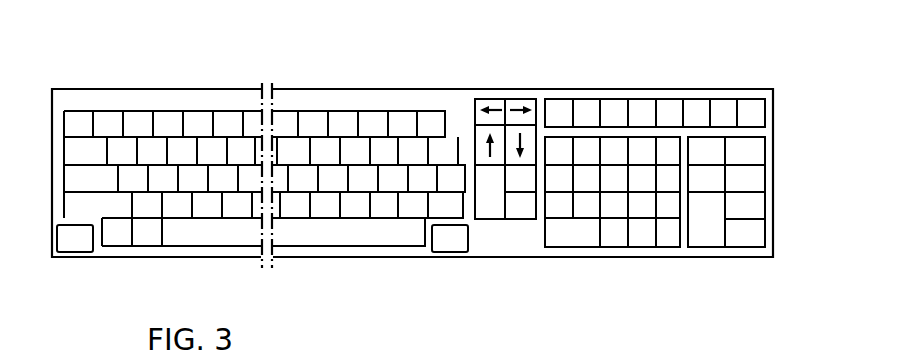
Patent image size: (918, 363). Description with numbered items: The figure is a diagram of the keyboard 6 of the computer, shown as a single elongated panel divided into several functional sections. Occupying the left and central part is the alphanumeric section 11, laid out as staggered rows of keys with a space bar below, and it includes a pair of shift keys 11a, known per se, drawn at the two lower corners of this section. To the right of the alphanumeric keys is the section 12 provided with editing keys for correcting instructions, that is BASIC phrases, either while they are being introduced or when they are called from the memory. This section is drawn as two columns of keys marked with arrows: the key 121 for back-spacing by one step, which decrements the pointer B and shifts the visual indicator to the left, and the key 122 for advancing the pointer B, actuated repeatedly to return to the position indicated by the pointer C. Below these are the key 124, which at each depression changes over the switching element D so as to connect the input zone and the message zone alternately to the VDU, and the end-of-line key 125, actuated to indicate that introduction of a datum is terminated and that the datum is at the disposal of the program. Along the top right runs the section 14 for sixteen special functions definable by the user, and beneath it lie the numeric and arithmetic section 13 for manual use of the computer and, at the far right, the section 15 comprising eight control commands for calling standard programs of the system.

The keyboard 6 is at (333, 89).
The alphanumeric section 11 is at (192, 117).
The shift keys 11a is at (83, 246).
The section provided with editing keys 12 is at (507, 72).
The key for back-spacing 121 is at (483, 105).
The key for advancing the pointer 122 is at (528, 105).
The key for connecting the zones alternately to the VDU 124 is at (523, 215).
The end-of-line key 125 is at (493, 215).
The numeric and arithmetic section 13 is at (615, 240).
The section for special functions 14 is at (668, 108).
The section of control commands 15 is at (753, 240).